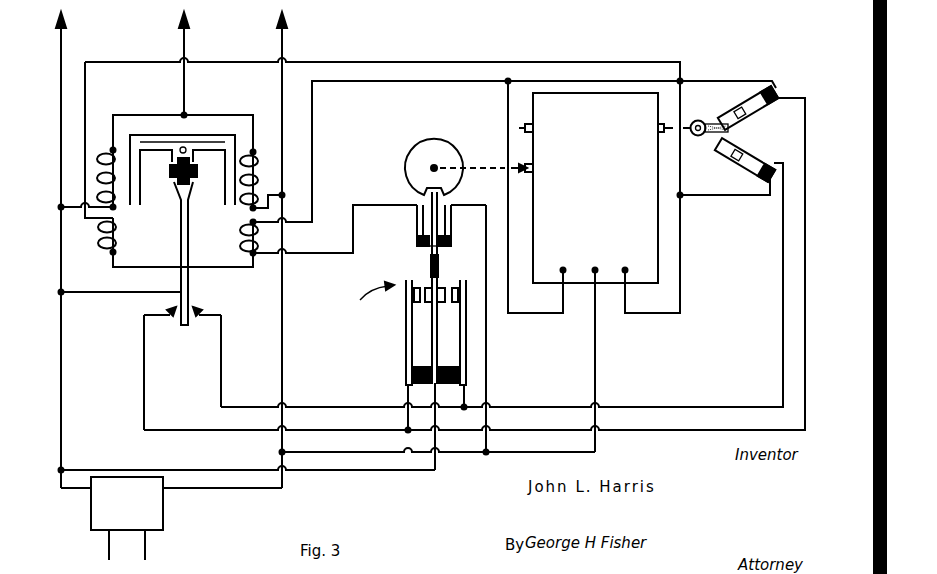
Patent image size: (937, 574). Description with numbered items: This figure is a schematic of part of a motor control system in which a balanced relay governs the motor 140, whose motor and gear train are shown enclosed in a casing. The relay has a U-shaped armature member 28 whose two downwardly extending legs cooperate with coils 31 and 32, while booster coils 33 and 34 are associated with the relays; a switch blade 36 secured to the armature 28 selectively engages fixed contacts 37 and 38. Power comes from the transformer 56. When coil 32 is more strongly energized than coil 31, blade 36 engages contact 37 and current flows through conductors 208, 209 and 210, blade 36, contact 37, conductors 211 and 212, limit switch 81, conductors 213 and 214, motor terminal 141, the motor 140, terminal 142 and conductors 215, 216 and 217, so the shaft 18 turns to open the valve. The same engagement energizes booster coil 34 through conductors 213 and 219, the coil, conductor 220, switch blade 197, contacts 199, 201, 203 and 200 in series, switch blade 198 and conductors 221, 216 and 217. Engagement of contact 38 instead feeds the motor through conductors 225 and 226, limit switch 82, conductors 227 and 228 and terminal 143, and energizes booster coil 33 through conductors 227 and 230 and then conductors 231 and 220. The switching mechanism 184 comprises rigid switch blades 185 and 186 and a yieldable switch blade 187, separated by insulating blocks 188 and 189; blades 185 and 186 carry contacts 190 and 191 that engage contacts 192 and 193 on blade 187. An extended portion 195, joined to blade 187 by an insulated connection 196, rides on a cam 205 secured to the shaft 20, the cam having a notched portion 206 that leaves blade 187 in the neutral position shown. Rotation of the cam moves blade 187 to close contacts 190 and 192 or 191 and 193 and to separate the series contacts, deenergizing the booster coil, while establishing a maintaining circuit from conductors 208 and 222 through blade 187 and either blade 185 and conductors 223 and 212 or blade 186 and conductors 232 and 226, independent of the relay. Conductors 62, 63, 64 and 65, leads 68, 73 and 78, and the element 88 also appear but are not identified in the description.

The shaft 18 is at (663, 126).
The shaft 20 is at (527, 176).
The armature member 28 is at (157, 156).
The relay coil 31 is at (102, 176).
The relay coil 32 is at (259, 176).
The booster coil 33 is at (120, 242).
The booster coil 34 is at (246, 244).
The switch blade 36 is at (190, 222).
The fixed contact 37 is at (170, 326).
The fixed contact 38 is at (196, 326).
The transformer 56 is at (76, 513).
The conductor 62 is at (66, 212).
The conductor 63 is at (133, 114).
The conductor 64 is at (241, 114).
The conductor 65 is at (284, 196).
The conductor 68 is at (63, 42).
The conductor 73 is at (284, 42).
The conductor 78 is at (186, 42).
The limit switch 81 is at (725, 91).
The limit switch 82 is at (722, 167).
The contact arm 88 is at (712, 113).
The motor 140 is at (602, 198).
The motor terminal 141 is at (563, 268).
The motor terminal 142 is at (595, 268).
The motor terminal 143 is at (625, 268).
The switching mechanism 184 is at (366, 295).
The rigid switch blade 185 is at (406, 345).
The rigid switch blade 186 is at (466, 345).
The yieldable switch blade 187 is at (443, 340).
The insulating block 188 is at (418, 384).
The insulating block 189 is at (450, 384).
The contact 190 is at (429, 311).
The contact 191 is at (454, 311).
The contact 192 is at (424, 287).
The contact 193 is at (444, 288).
The extended portion 195 is at (440, 247).
The insulated connection 196 is at (431, 262).
The flexible switch blade 197 is at (410, 203).
The flexible switch blade 198 is at (452, 210).
The contact 199 is at (417, 243).
The contact 200 is at (451, 240).
The contact 201 is at (417, 226).
The contact 203 is at (451, 225).
The cam 205 is at (424, 148).
The notched portion 206 is at (441, 188).
The conductor 208 is at (68, 488).
The conductor 209 is at (63, 403).
The conductor 210 is at (97, 296).
The conductor 211 is at (146, 396).
The conductor 212 is at (659, 432).
The conductor 213 is at (587, 81).
The conductor 214 is at (506, 106).
The conductor 215 is at (597, 376).
The conductor 216 is at (383, 452).
The conductor 217 is at (238, 488).
The conductor 219 is at (411, 81).
The conductor 220 is at (311, 256).
The conductor 221 is at (488, 322).
The conductor 222 is at (183, 468).
The conductor 223 is at (394, 427).
The conductor 225 is at (223, 361).
The conductor 226 is at (558, 405).
The conductor 227 is at (722, 197).
The conductor 228 is at (655, 315).
The conductor 230 is at (503, 62).
The conductor 231 is at (213, 269).
The conductor 232 is at (470, 405).